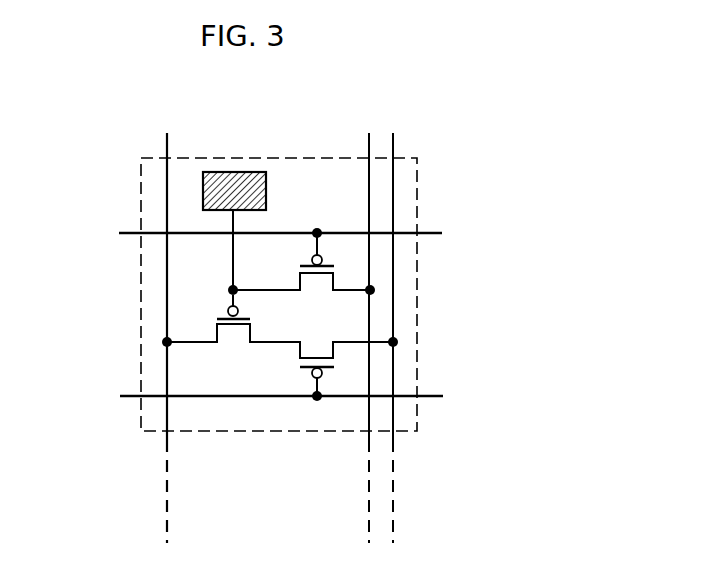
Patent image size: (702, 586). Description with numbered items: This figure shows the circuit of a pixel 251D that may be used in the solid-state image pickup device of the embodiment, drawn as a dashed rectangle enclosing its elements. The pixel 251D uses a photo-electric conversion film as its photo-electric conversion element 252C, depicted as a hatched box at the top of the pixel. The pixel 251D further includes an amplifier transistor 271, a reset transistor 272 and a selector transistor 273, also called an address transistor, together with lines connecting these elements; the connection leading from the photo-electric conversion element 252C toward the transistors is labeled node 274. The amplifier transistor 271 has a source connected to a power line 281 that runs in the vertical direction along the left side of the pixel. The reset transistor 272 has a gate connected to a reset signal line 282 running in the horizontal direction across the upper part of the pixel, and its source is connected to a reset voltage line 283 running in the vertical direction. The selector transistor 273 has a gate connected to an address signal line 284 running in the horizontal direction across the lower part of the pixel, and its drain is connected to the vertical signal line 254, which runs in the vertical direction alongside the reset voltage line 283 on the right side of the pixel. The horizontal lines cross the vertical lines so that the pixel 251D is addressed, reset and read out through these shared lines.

The pixel 251D is at (417, 410).
The photo-electric conversion element 252C is at (229, 180).
The vertical signal line 254 is at (393, 142).
The amplifier transistor 271 is at (228, 335).
The reset transistor 272 is at (320, 281).
The selector transistor 273 is at (317, 352).
The node 274 is at (232, 263).
The power line 281 is at (167, 140).
The reset signal line 282 is at (130, 232).
The reset voltage line 283 is at (369, 203).
The address signal line 284 is at (132, 398).